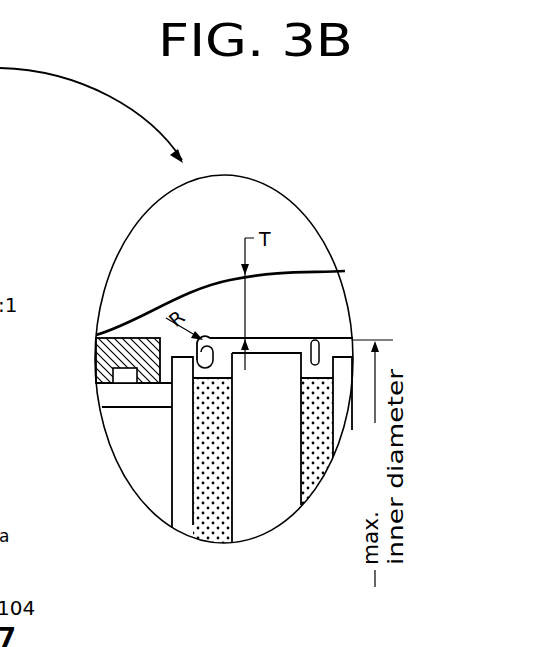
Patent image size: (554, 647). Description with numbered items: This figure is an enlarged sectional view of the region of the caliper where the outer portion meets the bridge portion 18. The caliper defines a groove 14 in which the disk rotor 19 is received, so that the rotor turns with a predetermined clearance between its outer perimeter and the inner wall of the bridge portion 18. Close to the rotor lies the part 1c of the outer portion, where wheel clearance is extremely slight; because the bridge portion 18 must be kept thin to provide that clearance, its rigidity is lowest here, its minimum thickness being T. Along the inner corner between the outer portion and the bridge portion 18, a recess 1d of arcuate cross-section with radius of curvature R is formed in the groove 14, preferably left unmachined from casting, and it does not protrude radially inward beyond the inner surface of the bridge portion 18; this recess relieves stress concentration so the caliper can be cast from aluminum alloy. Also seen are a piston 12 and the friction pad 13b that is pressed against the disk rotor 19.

The piston 12 is at (110, 393).
The bridge portion 18 is at (262, 305).
The part of the outer portion close to the disk rotor 1c is at (203, 317).
The recess 1d is at (214, 373).
The disk rotor 19 is at (266, 385).
The groove 14 is at (315, 340).
The friction pad 13b is at (185, 511).